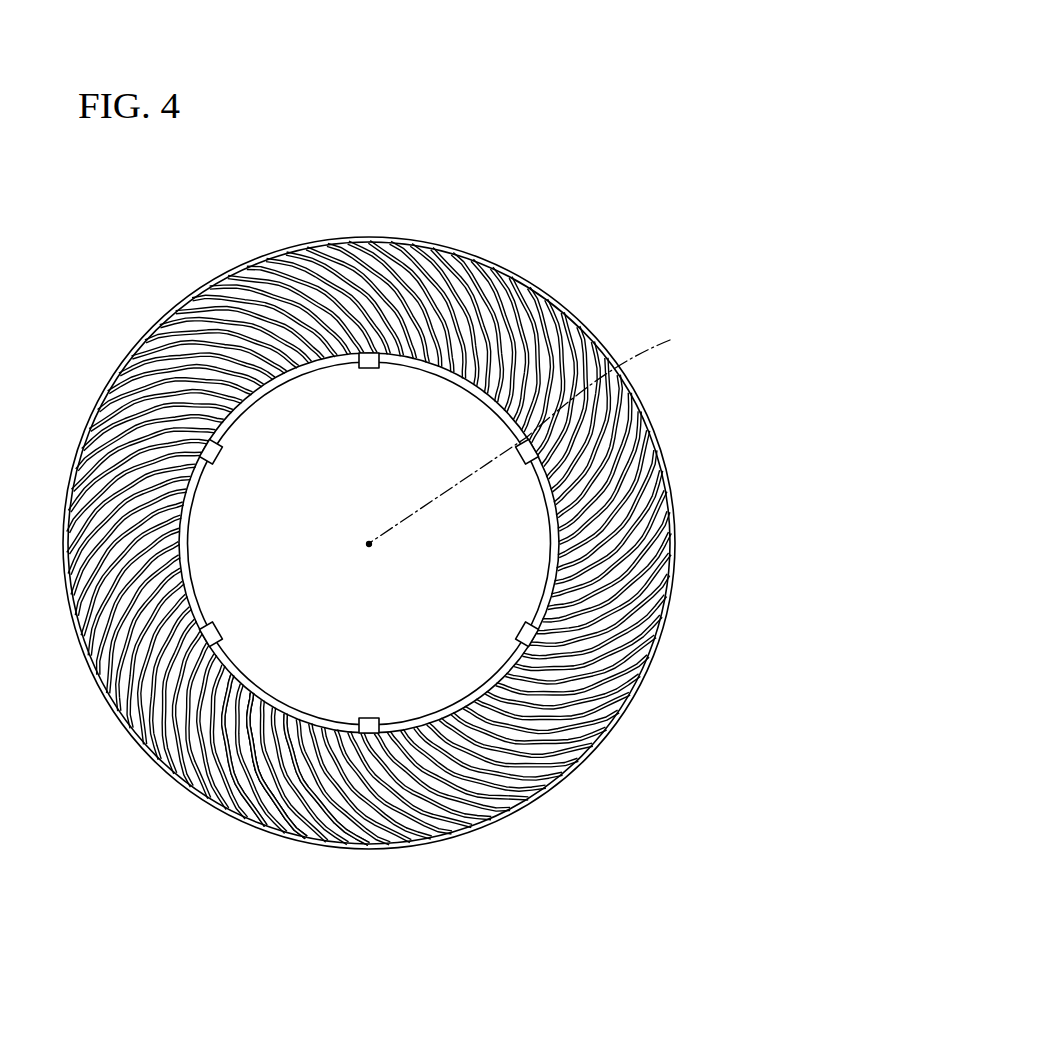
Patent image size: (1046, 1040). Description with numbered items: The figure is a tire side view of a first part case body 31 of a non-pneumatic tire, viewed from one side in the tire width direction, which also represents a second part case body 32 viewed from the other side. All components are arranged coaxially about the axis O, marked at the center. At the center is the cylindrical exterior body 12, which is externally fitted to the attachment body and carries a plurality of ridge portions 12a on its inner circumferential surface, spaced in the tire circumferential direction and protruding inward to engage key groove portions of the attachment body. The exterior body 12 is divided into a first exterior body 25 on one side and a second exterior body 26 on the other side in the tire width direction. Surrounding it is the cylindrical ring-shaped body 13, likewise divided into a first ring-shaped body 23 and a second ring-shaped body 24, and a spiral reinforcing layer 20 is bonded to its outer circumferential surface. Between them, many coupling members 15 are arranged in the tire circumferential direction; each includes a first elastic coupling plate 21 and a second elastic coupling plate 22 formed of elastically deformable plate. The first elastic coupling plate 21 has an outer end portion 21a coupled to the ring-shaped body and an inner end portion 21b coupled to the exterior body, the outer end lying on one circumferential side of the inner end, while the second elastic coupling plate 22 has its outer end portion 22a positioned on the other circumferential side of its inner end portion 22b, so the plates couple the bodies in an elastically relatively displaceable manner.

The first part case body 31 is at (383, 482).
The second part case body 32 is at (383, 482).
The spiral reinforcing layer 20 is at (383, 533).
The first elastic coupling plate 21 is at (367, 533).
The second elastic coupling plate 22 is at (367, 533).
The coupling member 15 is at (367, 533).
The first ring-shaped body 23 is at (371, 511).
The second ring-shaped body 24 is at (371, 511).
The ring-shaped body 13 is at (492, 257).
The first exterior body 25 is at (457, 478).
The second exterior body 26 is at (457, 478).
The exterior body 12 is at (457, 478).
The ridge portion 12a is at (371, 369).
The outer end portion 21a is at (306, 815).
The outer end portion 22a is at (367, 840).
The inner end portion 21b is at (265, 718).
The inner end portion 22b is at (251, 704).
The axis O is at (530, 437).